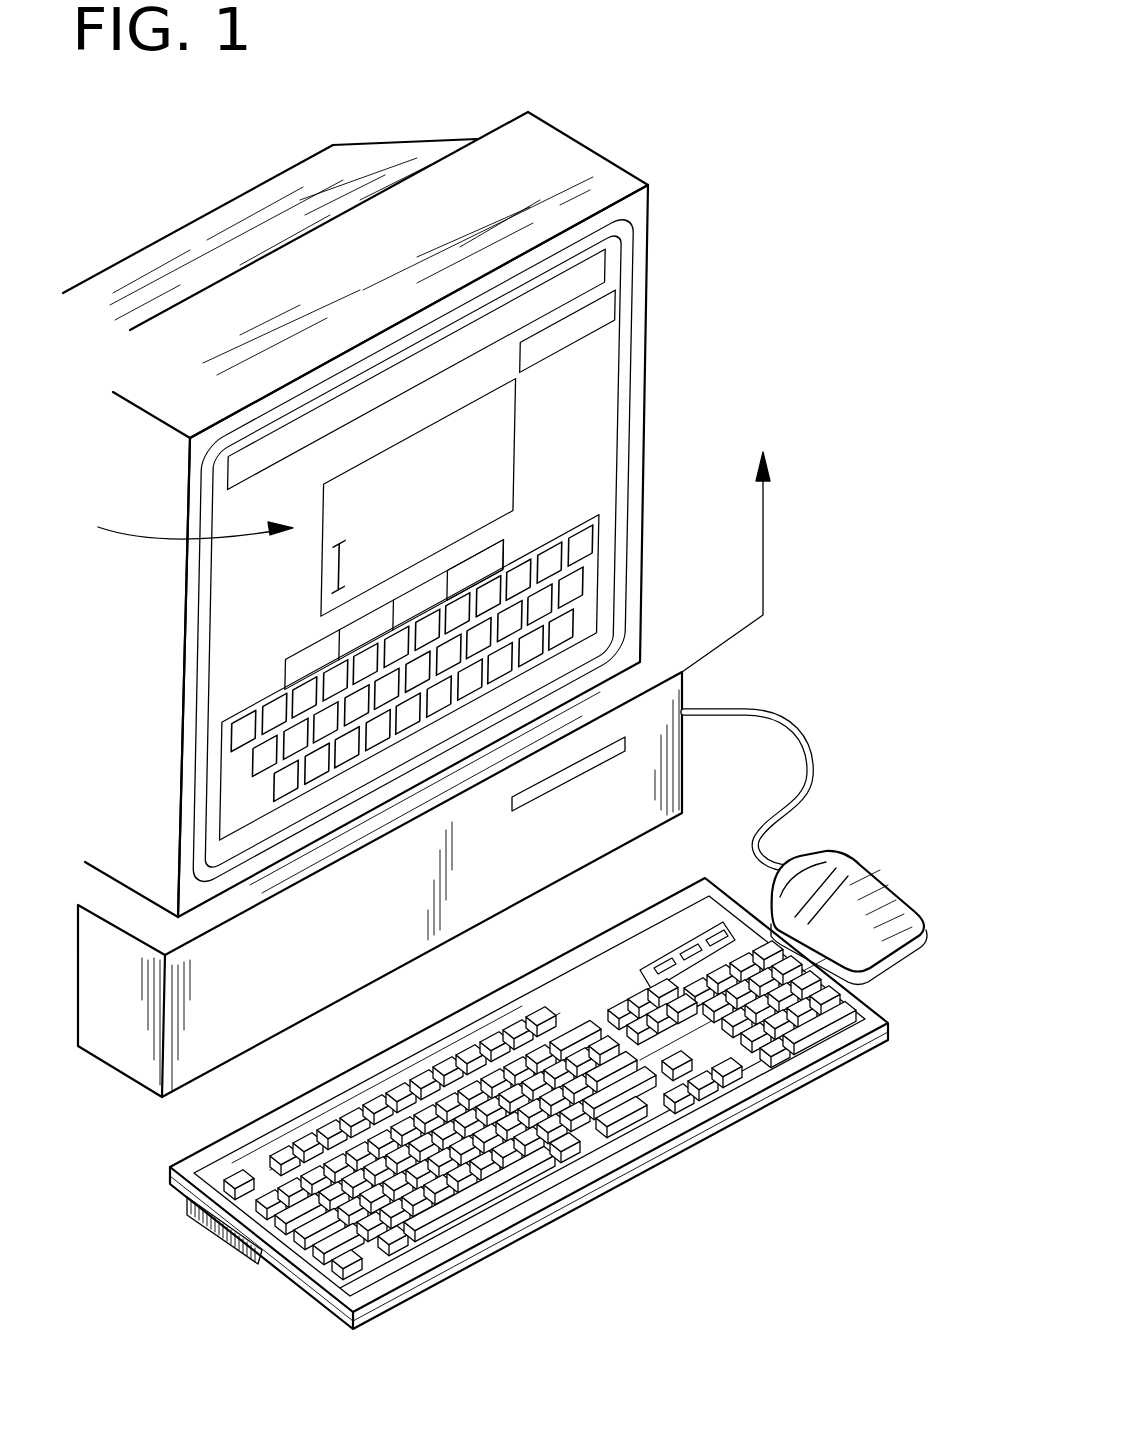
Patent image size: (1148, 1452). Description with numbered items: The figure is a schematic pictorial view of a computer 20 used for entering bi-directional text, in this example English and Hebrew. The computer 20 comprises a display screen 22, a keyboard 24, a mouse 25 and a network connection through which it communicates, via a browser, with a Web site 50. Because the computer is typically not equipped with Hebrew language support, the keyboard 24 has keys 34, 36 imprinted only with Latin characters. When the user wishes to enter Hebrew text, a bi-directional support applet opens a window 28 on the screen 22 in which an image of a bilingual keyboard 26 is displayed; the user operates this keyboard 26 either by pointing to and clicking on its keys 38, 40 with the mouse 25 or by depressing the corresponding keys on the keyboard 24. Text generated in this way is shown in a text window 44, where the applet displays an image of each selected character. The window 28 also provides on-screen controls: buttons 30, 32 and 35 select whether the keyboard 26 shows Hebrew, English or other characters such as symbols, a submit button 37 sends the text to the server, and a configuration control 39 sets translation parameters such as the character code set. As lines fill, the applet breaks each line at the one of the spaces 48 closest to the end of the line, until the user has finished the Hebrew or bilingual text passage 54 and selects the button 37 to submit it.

The computer 20 is at (180, 186).
The display screen 22 is at (197, 488).
The keyboard 24 is at (285, 1262).
The mouse 25 is at (903, 873).
The bilingual keyboard 26 is at (240, 808).
The window 28 is at (258, 680).
The Hebrew button 30 is at (340, 677).
The English button 32 is at (350, 630).
The key 34 is at (300, 1200).
The symbols button 35 is at (323, 556).
The key 36 is at (335, 1172).
The submit button 37 is at (505, 548).
The key 38 is at (258, 733).
The configuration control 39 is at (618, 306).
The key 40 is at (262, 770).
The text window 44 is at (515, 440).
The space 48 is at (377, 480).
The Web site 50 is at (608, 260).
The text passage 54 is at (179, 525).